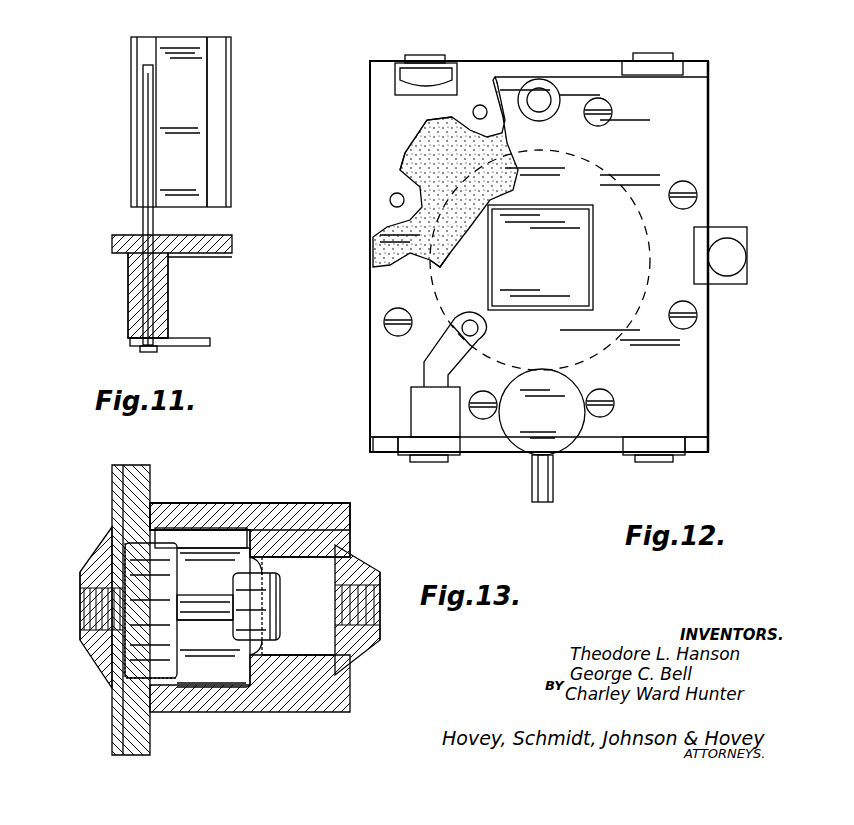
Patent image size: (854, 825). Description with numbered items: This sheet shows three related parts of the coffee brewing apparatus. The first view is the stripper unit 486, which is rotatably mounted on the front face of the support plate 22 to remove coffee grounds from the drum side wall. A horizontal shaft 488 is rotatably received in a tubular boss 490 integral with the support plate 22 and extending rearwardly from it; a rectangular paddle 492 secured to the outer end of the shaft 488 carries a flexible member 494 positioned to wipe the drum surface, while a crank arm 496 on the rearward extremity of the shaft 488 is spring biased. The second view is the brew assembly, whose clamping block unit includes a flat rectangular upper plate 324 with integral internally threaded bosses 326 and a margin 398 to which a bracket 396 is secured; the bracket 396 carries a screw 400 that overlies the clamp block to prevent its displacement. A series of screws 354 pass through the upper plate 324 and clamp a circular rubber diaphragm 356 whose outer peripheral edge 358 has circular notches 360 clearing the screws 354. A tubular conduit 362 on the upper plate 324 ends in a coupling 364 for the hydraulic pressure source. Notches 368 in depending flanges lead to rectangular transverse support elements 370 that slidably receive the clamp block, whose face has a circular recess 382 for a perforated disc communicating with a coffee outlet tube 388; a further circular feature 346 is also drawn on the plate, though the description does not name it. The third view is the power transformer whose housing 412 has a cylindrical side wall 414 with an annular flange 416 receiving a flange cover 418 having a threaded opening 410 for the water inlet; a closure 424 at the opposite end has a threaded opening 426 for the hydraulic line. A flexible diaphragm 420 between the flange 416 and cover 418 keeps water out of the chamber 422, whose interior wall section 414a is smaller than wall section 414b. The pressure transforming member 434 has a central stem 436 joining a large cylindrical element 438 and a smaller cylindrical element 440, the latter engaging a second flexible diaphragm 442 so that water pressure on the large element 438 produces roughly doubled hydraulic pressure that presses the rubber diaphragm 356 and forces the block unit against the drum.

In FIG. 11, the support plate 22 is at (232, 246).
In FIG. 11, the stripper unit 486 is at (130, 118).
In FIG. 11, the horizontal shaft 488 is at (142, 223).
In FIG. 11, the tubular boss 490 is at (164, 298).
In FIG. 11, the rectangular paddle 492 is at (187, 48).
In FIG. 11, the flexible member 494 is at (217, 82).
In FIG. 11, the crank arm 496 is at (204, 338).
In FIG. 12, the upper plate 324 is at (700, 407).
In FIG. 12, the internally threaded boss 326 is at (546, 116).
In FIG. 12, the circular boss 346 is at (572, 382).
In FIG. 12, the screw 354 is at (612, 114).
In FIG. 12, the rubber diaphragm 356 is at (442, 254).
In FIG. 12, the outer peripheral edge 358 is at (428, 144).
In FIG. 12, the circular notch 360 is at (457, 138).
In FIG. 12, the tubular conduit 362 is at (484, 330).
In FIG. 12, the coupling 364 is at (411, 408).
In FIG. 12, the notch 368 is at (456, 80).
In FIG. 12, the transverse support element 370 is at (448, 46).
In FIG. 12, the circular recess 382 is at (614, 160).
In FIG. 12, the coffee outlet tube 388 is at (552, 470).
In FIG. 12, the bracket 396 is at (740, 236).
In FIG. 12, the margin 398 is at (708, 350).
In FIG. 12, the screw 400 is at (742, 262).
In FIG. 13, the internally threaded opening 410 is at (90, 626).
In FIG. 13, the fluid power transformer housing 412 is at (210, 500).
In FIG. 13, the cylindrical side wall 414 is at (284, 514).
In FIG. 13, the interior wall section 414a is at (292, 606).
In FIG. 13, the wall section 414b is at (202, 607).
In FIG. 13, the annular flange 416 is at (150, 478).
In FIG. 13, the flange cover 418 is at (112, 478).
In FIG. 13, the flexible diaphragm 420 is at (151, 610).
In FIG. 13, the chamber 422 is at (211, 669).
In FIG. 13, the closure 424 is at (380, 572).
In FIG. 13, the internally threaded opening 426 is at (380, 628).
In FIG. 13, the pressure transforming member 434 is at (186, 626).
In FIG. 13, the central stem 436 is at (214, 600).
In FIG. 13, the large cylindrical element 438 is at (122, 572).
In FIG. 13, the smaller cylindrical element 440 is at (278, 616).
In FIG. 13, the second flexible diaphragm 442 is at (296, 656).